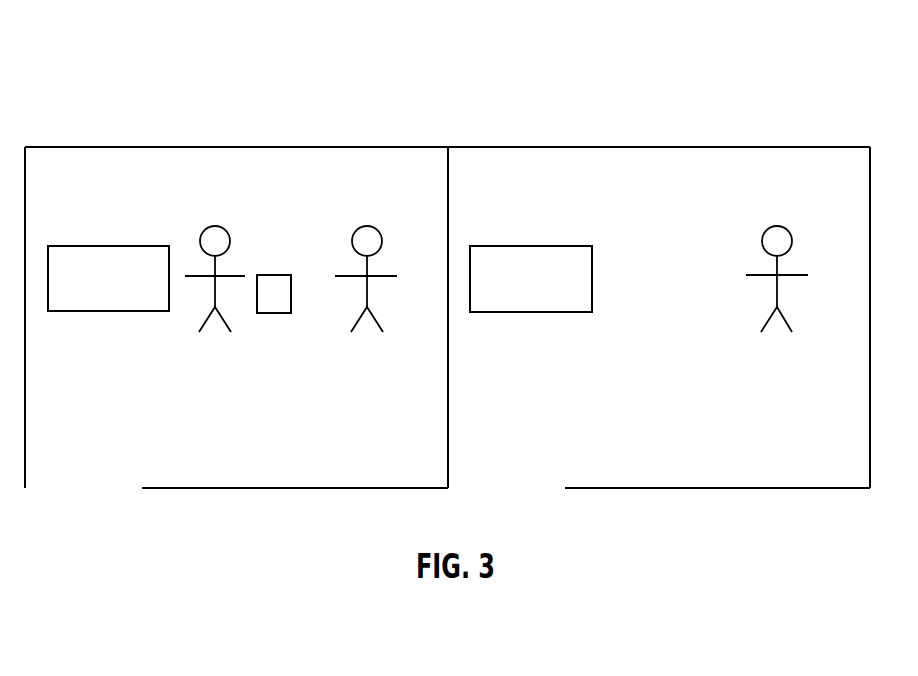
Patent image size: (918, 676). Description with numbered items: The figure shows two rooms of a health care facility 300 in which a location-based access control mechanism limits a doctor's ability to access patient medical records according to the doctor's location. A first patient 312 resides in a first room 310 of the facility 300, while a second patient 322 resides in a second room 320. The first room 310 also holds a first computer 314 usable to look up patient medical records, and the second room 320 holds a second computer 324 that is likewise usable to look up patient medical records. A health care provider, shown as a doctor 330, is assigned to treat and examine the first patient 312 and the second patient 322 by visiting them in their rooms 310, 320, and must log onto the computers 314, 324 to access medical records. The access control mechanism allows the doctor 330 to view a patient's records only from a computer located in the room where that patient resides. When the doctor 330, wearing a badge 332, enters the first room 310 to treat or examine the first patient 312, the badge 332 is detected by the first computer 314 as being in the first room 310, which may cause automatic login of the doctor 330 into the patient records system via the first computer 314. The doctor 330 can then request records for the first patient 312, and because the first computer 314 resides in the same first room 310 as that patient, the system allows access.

The health care facility 300 is at (357, 78).
The first room 310 is at (295, 465).
The second room 320 is at (717, 465).
The first patient 312 is at (366, 226).
The first computer 314 is at (120, 246).
The second patient 322 is at (774, 226).
The second computer 324 is at (542, 246).
The doctor 330 is at (213, 225).
The badge 332 is at (270, 275).